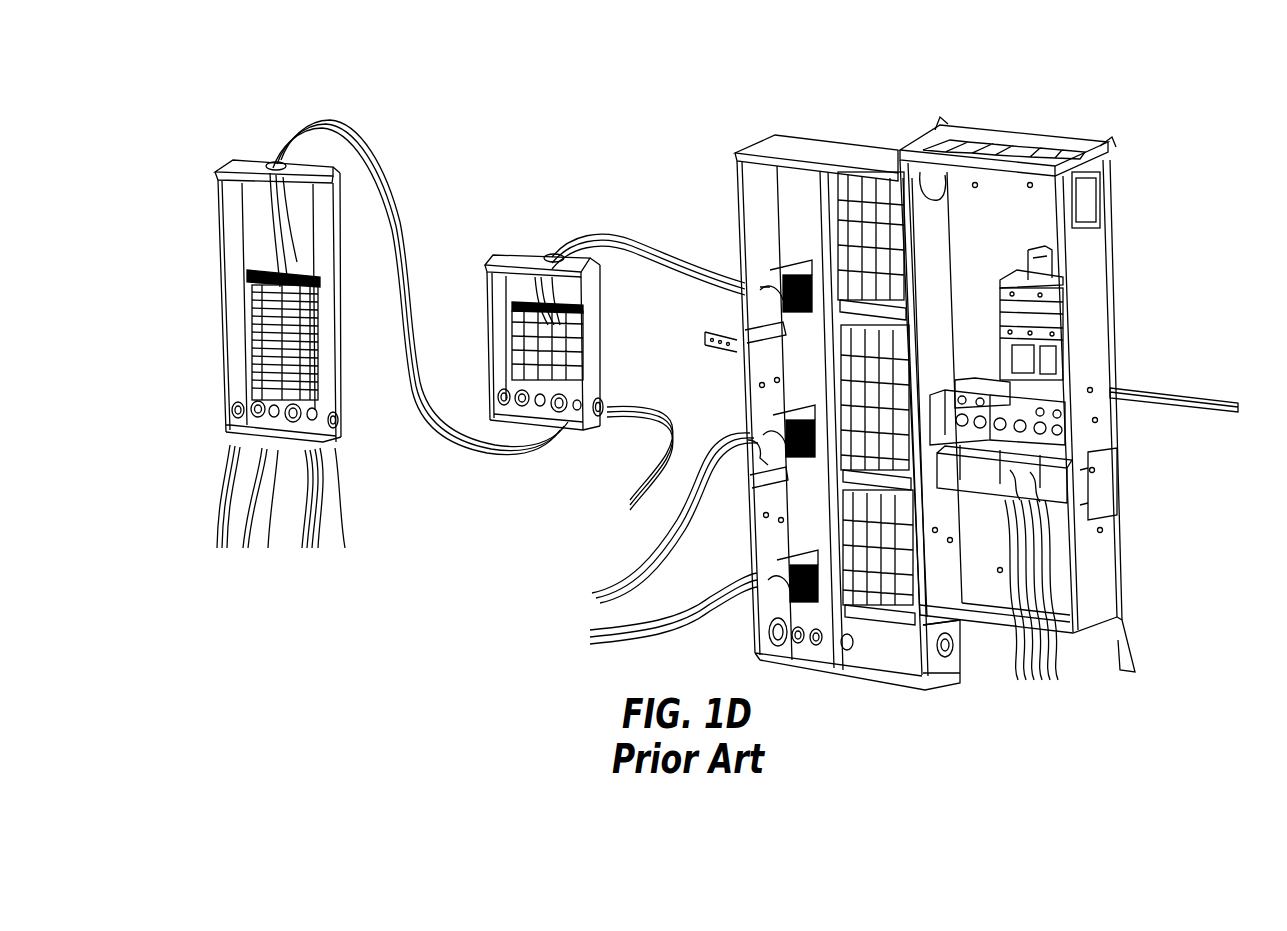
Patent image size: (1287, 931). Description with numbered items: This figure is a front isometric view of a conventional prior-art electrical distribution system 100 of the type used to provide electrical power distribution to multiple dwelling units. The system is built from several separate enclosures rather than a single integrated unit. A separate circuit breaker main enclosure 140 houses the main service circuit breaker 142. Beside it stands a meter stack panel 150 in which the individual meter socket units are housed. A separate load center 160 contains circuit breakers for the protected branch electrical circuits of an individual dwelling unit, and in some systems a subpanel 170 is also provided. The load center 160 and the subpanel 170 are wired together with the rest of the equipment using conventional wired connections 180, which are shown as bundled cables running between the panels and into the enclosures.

The prior art metering/distribution system 100 is at (603, 100).
The main enclosure 140 is at (999, 118).
The contactor 142 is at (1043, 312).
The meter enclosure 150 is at (822, 112).
The terminal box 160 is at (226, 148).
The junction box 170 is at (522, 232).
The cables 180 is at (594, 220).